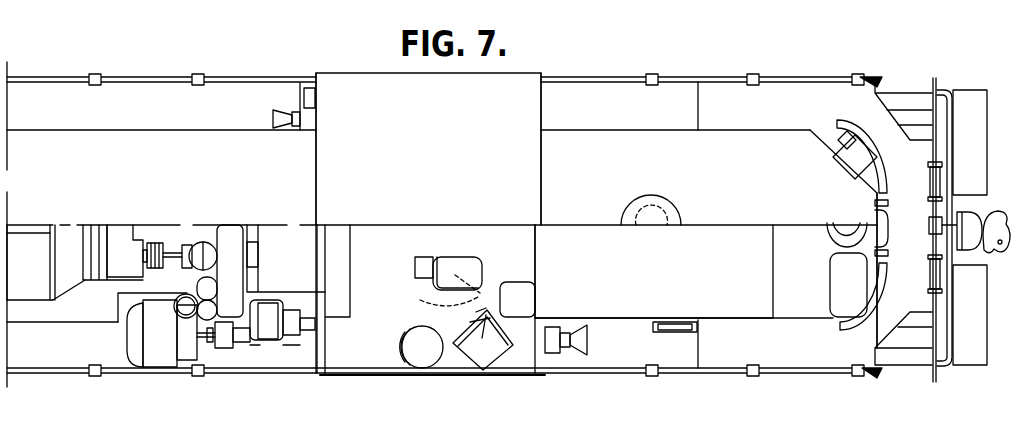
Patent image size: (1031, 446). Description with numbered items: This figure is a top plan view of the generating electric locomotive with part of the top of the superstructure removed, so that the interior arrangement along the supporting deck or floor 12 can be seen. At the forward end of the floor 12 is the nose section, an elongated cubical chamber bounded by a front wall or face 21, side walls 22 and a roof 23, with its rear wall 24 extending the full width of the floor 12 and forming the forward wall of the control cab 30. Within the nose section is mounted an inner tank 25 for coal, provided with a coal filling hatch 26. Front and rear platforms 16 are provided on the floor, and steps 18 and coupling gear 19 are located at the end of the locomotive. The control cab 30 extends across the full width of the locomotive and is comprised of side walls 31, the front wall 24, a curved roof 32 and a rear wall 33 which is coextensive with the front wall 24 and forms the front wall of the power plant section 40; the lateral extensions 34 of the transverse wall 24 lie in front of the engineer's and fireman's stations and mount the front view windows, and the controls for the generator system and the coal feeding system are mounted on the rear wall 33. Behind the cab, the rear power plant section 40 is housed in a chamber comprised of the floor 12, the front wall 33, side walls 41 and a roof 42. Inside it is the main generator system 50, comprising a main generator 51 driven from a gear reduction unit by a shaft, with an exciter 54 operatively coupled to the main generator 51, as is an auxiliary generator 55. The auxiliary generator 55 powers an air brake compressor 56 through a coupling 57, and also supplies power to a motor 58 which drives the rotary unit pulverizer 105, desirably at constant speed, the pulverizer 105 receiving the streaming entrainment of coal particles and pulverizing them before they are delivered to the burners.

The supporting deck or floor 12 is at (800, 237).
The front and rear platforms 16 is at (918, 235).
The steps 18 is at (907, 100).
The coupling gear 19 is at (991, 247).
The front wall or face 21 is at (877, 282).
The side walls 22 is at (717, 130).
The roof 23 is at (770, 184).
The rear wall 24 is at (538, 253).
The inner tank 25 is at (735, 235).
The coal filling hatch 26 is at (663, 183).
The control cab 30 is at (452, 208).
The side walls 31 is at (437, 377).
The curved roof 32 is at (517, 157).
The rear wall 33 is at (328, 340).
The lateral extensions 34 is at (537, 357).
The rear power plant section 40 is at (197, 171).
The side walls 41 is at (145, 130).
The roof 42 is at (290, 210).
The main generator system 50 is at (39, 235).
The main generator 51 is at (28, 228).
The exciter 54 is at (124, 230).
The auxiliary generator 55 is at (118, 273).
The air brake compressor 56 is at (207, 242).
The coupling 57 is at (160, 242).
The motor 58 is at (162, 353).
The rotary unit pulverizer 105 is at (263, 360).